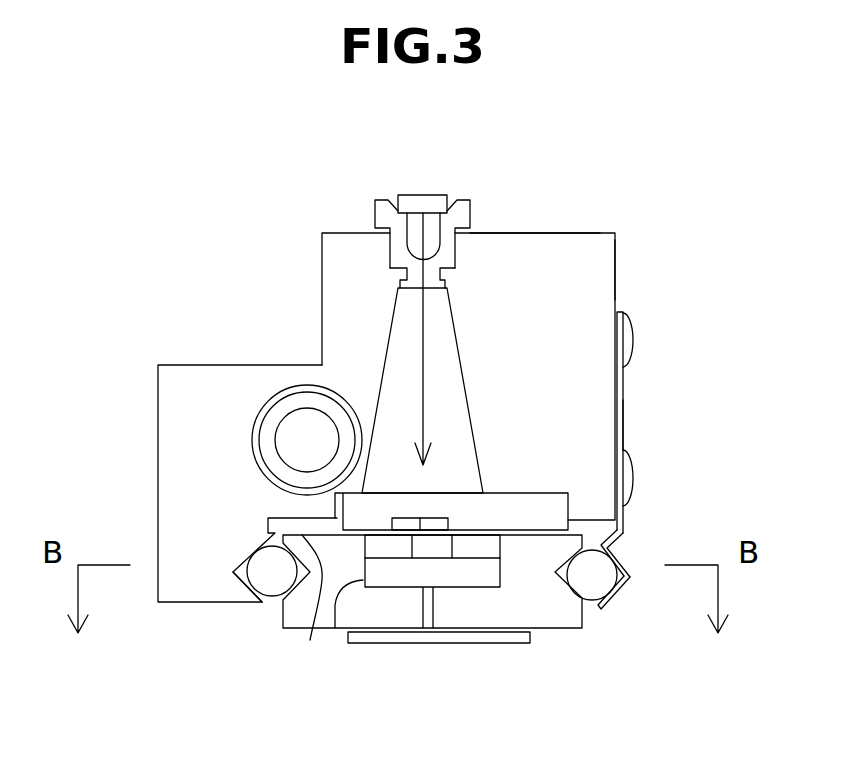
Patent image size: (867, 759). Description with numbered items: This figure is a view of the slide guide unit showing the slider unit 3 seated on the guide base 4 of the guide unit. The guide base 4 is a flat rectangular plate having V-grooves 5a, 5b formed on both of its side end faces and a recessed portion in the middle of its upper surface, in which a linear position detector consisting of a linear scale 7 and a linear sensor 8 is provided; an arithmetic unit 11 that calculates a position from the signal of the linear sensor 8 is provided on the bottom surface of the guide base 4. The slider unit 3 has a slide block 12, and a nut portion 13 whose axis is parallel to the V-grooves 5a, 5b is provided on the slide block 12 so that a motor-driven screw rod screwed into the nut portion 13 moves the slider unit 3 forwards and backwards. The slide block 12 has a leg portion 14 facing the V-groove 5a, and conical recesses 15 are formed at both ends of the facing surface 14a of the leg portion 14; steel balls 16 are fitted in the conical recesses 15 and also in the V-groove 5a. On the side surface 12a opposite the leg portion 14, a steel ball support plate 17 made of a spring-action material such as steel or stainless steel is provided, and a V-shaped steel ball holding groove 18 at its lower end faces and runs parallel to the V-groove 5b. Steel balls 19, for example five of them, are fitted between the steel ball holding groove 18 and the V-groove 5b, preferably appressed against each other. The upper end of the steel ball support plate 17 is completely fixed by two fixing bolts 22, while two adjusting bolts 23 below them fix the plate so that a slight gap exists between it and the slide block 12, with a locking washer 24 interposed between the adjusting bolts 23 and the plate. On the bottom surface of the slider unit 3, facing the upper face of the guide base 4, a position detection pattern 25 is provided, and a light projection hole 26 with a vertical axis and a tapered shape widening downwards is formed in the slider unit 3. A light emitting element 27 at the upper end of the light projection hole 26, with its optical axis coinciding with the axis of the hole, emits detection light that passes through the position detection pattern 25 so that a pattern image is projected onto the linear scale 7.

The slider unit 3 is at (539, 226).
The guide base 4 is at (593, 590).
The V-groove 5a is at (268, 558).
The V-groove 5b is at (606, 548).
The linear scale 7 is at (500, 552).
The linear sensor 8 is at (337, 630).
The arithmetic unit 11 is at (490, 645).
The slide block 12 is at (348, 233).
The side surface 12a is at (617, 260).
The nut portion 13 is at (292, 384).
The leg portion 14 is at (192, 462).
The facing surface 14a is at (310, 640).
The conical recesses 15 is at (242, 582).
The steel balls 16 is at (268, 588).
The steel ball support plate 17 is at (623, 392).
The steel ball holding groove 18 is at (628, 570).
The steel balls 19 is at (590, 600).
The fixing bolts 22 is at (627, 333).
The adjusting bolts 23 is at (634, 470).
The locking washer 24 is at (623, 450).
The position detection pattern 25 is at (520, 492).
The light projection hole 26 is at (447, 391).
The light emitting element 27 is at (449, 196).